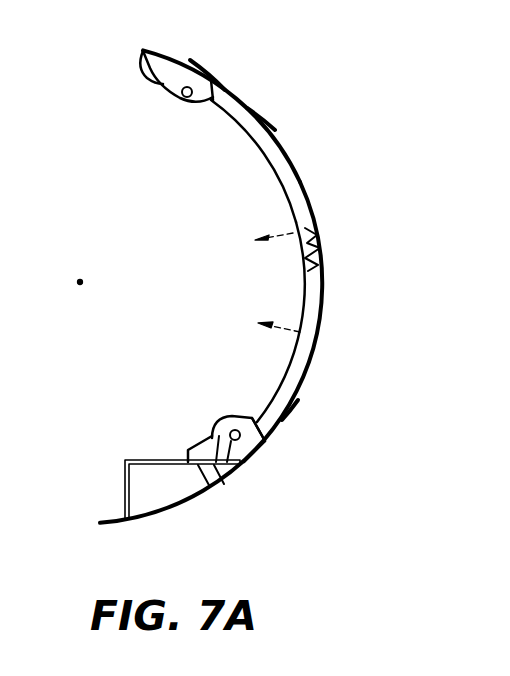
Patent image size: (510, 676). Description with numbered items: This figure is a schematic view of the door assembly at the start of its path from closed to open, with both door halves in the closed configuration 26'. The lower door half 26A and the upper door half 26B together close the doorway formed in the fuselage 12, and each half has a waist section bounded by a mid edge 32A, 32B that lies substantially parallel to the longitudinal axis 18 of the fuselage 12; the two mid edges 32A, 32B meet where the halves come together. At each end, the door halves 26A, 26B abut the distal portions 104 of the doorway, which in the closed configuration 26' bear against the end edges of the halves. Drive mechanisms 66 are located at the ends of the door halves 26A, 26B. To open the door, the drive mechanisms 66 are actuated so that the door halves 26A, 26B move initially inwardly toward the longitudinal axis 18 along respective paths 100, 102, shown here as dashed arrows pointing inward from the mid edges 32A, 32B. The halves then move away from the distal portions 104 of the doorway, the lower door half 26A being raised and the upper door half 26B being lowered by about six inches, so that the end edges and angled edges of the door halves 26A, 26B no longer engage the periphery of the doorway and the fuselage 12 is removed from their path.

The fuselage 12 is at (176, 506).
The longitudinal axis 18 is at (80, 280).
The closed configuration 26' is at (309, 265).
The lower door half 26A is at (305, 345).
The upper door half 26B is at (298, 168).
The mid edge 32A is at (320, 275).
The mid edge 32B is at (320, 223).
The drive mechanism 66 is at (155, 82).
The path 100 is at (283, 331).
The path 102 is at (283, 233).
The distal portion of the doorway 104 is at (213, 77).